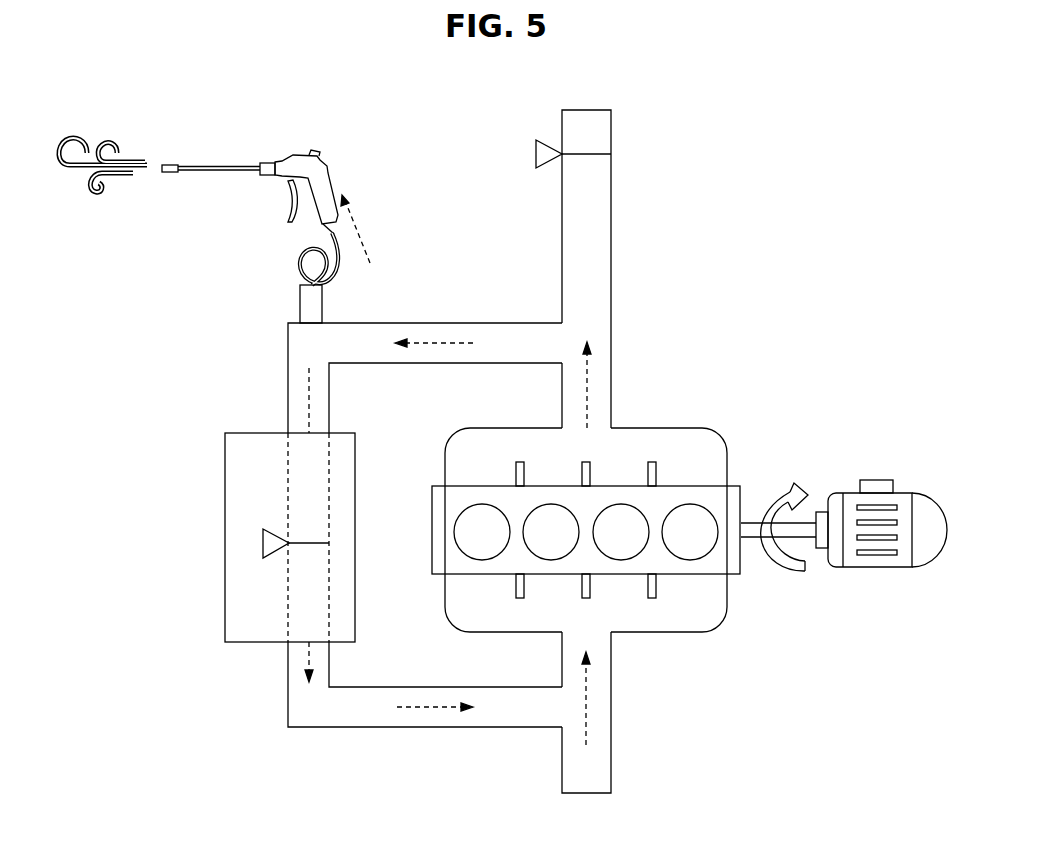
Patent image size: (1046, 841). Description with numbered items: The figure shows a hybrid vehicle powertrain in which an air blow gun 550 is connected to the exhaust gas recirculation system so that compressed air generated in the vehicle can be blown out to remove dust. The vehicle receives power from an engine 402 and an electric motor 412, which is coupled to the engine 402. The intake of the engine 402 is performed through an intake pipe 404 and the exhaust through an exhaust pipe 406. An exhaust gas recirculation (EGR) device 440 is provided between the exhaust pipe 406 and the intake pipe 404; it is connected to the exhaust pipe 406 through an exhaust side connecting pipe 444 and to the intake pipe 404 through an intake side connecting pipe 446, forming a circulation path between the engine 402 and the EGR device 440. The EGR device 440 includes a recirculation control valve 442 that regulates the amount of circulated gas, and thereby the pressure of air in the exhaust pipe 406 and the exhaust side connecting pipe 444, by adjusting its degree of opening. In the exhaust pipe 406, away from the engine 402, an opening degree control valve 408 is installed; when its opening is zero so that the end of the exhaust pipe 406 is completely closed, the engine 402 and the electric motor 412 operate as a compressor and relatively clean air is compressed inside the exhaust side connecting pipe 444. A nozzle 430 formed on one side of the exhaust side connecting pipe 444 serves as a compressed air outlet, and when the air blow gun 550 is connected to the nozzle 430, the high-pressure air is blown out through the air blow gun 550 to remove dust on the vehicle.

The engine 402 is at (743, 497).
The intake pipe 404 is at (612, 733).
The exhaust pipe 406 is at (612, 300).
The opening degree control valve 408 is at (535, 150).
The electric motor 412 is at (878, 480).
The nozzle 430 is at (300, 300).
The exhaust gas recirculation (EGR) device 440 is at (225, 460).
The recirculation control valve 442 is at (263, 541).
The exhaust side connecting pipe 444 is at (489, 323).
The intake side connecting pipe 446 is at (490, 727).
The air blow gun 550 is at (276, 176).